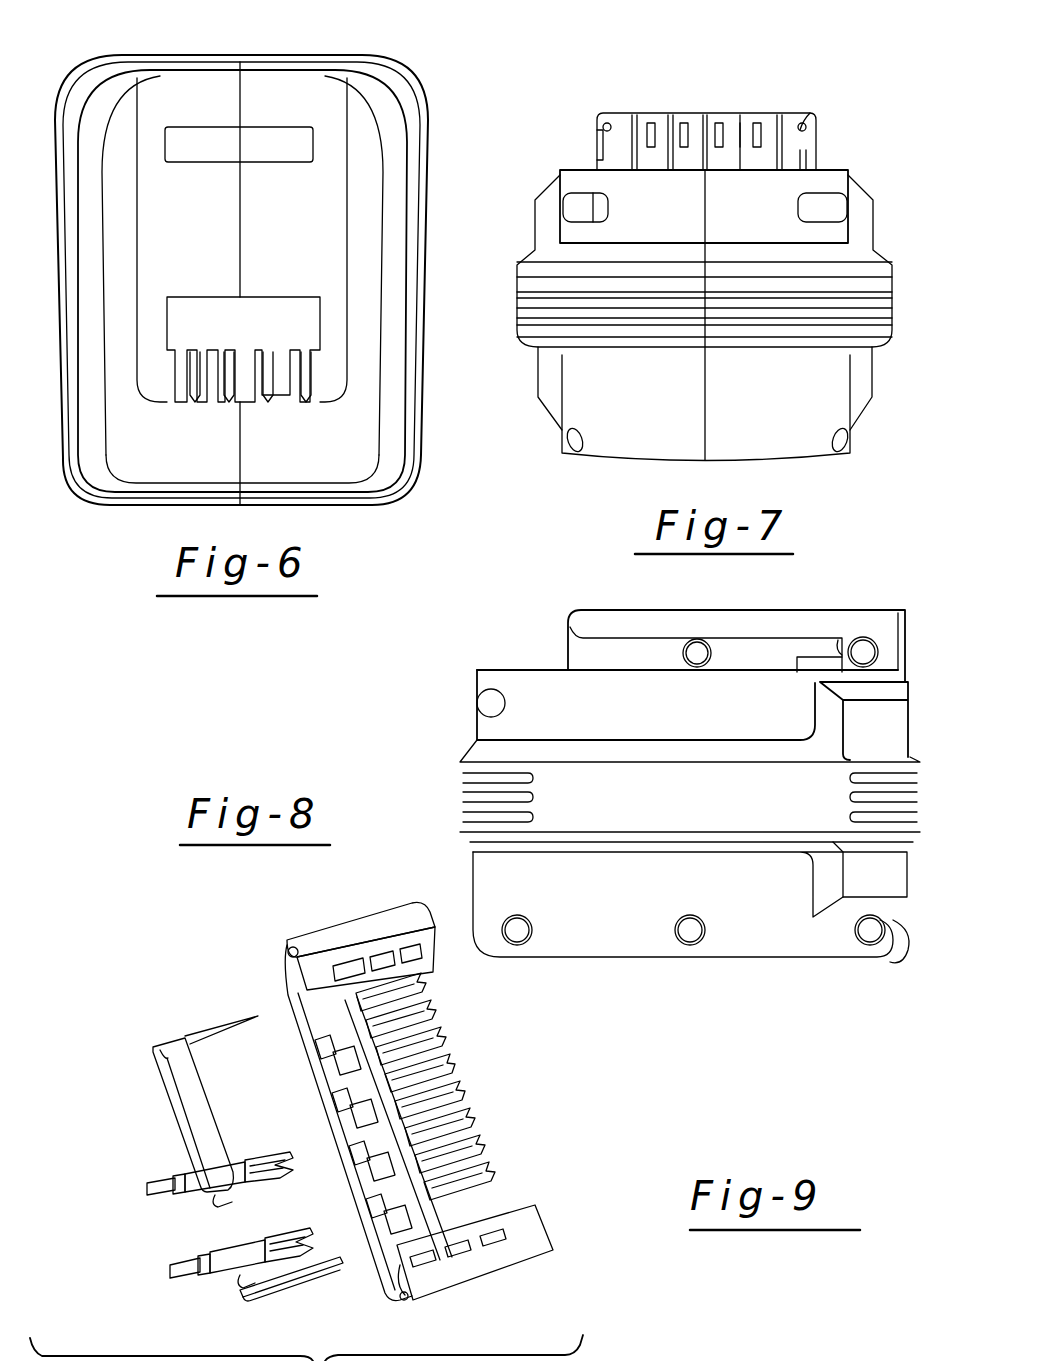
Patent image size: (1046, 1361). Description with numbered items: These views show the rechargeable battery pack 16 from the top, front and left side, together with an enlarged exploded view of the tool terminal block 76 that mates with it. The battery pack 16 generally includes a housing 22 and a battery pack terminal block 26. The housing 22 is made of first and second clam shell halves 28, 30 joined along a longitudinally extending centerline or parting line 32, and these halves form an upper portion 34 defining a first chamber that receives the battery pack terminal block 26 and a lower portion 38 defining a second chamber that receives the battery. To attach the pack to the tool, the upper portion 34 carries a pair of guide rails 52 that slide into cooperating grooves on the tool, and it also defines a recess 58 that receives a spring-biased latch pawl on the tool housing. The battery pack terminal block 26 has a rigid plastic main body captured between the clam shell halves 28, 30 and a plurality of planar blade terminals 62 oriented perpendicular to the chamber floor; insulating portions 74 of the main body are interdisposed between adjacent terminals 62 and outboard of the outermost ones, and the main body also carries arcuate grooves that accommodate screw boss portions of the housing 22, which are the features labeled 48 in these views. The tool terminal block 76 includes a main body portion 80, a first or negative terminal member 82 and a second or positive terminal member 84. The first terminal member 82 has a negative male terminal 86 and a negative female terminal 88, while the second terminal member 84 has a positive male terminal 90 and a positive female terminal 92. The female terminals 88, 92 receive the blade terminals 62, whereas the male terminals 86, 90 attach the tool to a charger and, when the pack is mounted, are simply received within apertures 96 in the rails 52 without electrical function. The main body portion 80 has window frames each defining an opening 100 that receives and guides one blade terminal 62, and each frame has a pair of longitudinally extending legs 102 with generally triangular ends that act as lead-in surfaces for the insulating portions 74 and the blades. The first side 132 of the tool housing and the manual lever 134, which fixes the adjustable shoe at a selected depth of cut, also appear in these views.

In FIG. 6, the rechargeable battery pack 16 is at (272, 286).
In FIG. 7, the rechargeable battery pack 16 is at (710, 264).
In FIG. 9, the rechargeable battery pack 16 is at (651, 783).
In FIG. 6, the housing 22 is at (92, 60).
In FIG. 7, the housing 22 is at (856, 181).
In FIG. 9, the housing 22 is at (522, 660).
In FIG. 6, the battery pack terminal block 26 is at (290, 332).
In FIG. 7, the battery pack terminal block 26 is at (653, 120).
In FIG. 6, the first clam shell half 28 is at (58, 220).
In FIG. 7, the first clam shell half 28 is at (575, 403).
In FIG. 6, the second clam shell half 30 is at (423, 148).
In FIG. 7, the second clam shell half 30 is at (843, 380).
In FIG. 6, the parting line 32 is at (243, 87).
In FIG. 7, the parting line 32 is at (713, 440).
In FIG. 6, the upper portion 34 is at (352, 125).
In FIG. 7, the upper portion 34 is at (590, 147).
In FIG. 6, the lower portion 38 is at (74, 488).
In FIG. 7, the lower portion 38 is at (535, 385).
In FIG. 7, the fastener holes 48 is at (835, 450).
In FIG. 9, the fastener holes 48 is at (872, 638).
In FIG. 6, the guide rails 52 is at (120, 278).
In FIG. 7, the guide rails 52 is at (600, 117).
In FIG. 9, the guide rails 52 is at (630, 623).
In FIG. 6, the recess 58 is at (185, 136).
In FIG. 6, the terminals 62 is at (188, 405).
In FIG. 7, the terminals 62 is at (688, 127).
In FIG. 7, the insulating portions 74 is at (742, 120).
In FIG. 8, the tool terminal block 76 is at (163, 1084).
In FIG. 8, the main body portion 80 is at (440, 1083).
In FIG. 8, the first terminal member 82 is at (160, 1088).
In FIG. 8, the second terminal member 84 is at (297, 1285).
In FIG. 8, the negative male terminal 86 is at (230, 1020).
In FIG. 8, the negative female terminal 88 is at (242, 1158).
In FIG. 8, the positive male terminal 90 is at (332, 1268).
In FIG. 8, the positive female terminal 92 is at (283, 1222).
In FIG. 7, the apertures 96 is at (800, 115).
In FIG. 8, the opening 100 is at (425, 1040).
In FIG. 8, the legs 102 is at (470, 1145).
In FIG. 9, the first side 132 is at (838, 650).
In FIG. 7, the manual lever 134 is at (810, 155).
In FIG. 9, the manual lever 134 is at (797, 665).